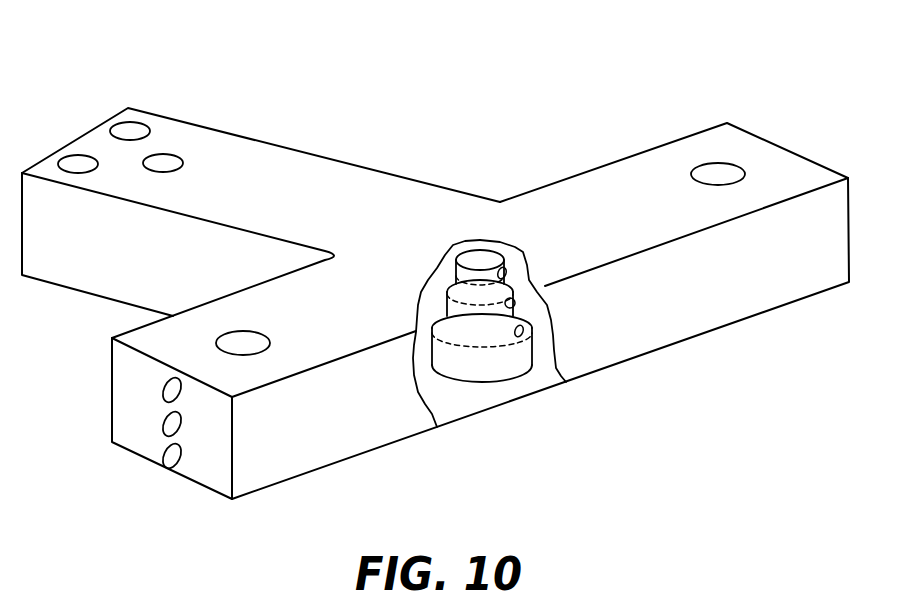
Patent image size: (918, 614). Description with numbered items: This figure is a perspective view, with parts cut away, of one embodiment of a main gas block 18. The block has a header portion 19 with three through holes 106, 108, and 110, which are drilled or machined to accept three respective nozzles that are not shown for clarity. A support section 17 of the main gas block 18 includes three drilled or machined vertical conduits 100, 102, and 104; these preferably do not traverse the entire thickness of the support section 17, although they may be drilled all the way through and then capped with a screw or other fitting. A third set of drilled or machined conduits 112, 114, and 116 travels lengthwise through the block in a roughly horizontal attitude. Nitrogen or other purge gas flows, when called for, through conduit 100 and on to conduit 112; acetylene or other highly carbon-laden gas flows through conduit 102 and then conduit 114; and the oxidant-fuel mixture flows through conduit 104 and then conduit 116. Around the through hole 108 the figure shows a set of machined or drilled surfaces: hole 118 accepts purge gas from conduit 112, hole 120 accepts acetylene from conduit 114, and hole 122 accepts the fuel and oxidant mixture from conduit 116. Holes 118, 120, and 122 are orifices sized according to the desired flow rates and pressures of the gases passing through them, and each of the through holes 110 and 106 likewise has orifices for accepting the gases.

The support section 17 is at (332, 172).
The main gas block 18 is at (608, 45).
The header portion 19 is at (647, 168).
The vertical conduit 100 is at (128, 122).
The vertical conduit 102 is at (165, 154).
The vertical conduit 104 is at (77, 155).
The through hole 106 is at (718, 163).
The through hole 108 is at (485, 249).
The through hole 110 is at (218, 338).
The horizontal conduit 112 is at (163, 388).
The horizontal conduit 114 is at (164, 421).
The horizontal conduit 116 is at (163, 457).
The hole 118 is at (507, 272).
The hole 120 is at (515, 304).
The hole 122 is at (523, 332).